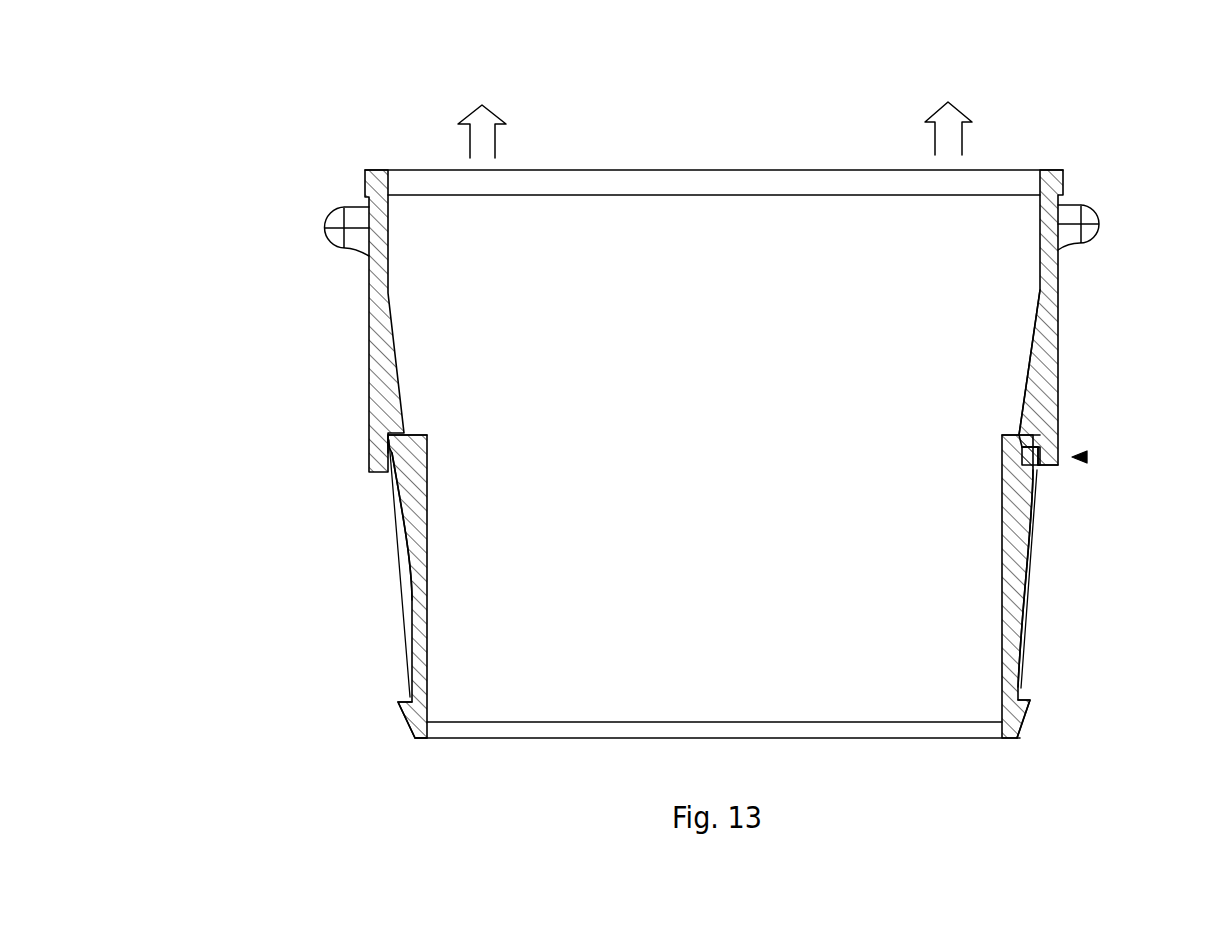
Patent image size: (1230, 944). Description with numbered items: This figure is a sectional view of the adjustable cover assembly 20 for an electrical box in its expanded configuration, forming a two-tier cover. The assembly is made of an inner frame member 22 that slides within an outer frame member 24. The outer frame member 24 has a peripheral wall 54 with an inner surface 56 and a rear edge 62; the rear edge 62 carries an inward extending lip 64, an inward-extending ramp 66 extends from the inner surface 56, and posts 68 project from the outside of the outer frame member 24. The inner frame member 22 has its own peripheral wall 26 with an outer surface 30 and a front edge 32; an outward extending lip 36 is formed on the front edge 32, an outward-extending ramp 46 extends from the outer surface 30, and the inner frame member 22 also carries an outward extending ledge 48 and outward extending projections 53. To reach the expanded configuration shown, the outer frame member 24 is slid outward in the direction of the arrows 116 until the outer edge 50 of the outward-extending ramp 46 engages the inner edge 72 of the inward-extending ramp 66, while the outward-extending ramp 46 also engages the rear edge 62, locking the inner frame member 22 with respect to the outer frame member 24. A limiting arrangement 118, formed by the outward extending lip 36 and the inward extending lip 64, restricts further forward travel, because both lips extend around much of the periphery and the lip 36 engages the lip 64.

The adjustable cover assembly 20 is at (288, 170).
The inner frame member 22 is at (403, 517).
The outer frame member 24 is at (369, 337).
The peripheral wall 26 is at (420, 597).
The outer surface 30 is at (1020, 613).
The front edge 32 is at (1008, 433).
The outward extending lip 36 is at (1048, 445).
The outward-extending ramp 46 is at (1037, 545).
The outward extending ledge 48 is at (1027, 713).
The outer edge 50 is at (394, 460).
The outward extending projections 53 is at (395, 697).
The peripheral wall 54 is at (1048, 263).
The inner surface 56 is at (1043, 257).
The rear edge 62 is at (1033, 470).
The inward extending lip 64 is at (1038, 478).
The inward-extending ramp 66 is at (1028, 358).
The posts 68 is at (325, 228).
The inner edge 72 is at (394, 460).
The arrows 116 is at (469, 140).
The limiting arrangement 118 is at (1085, 457).